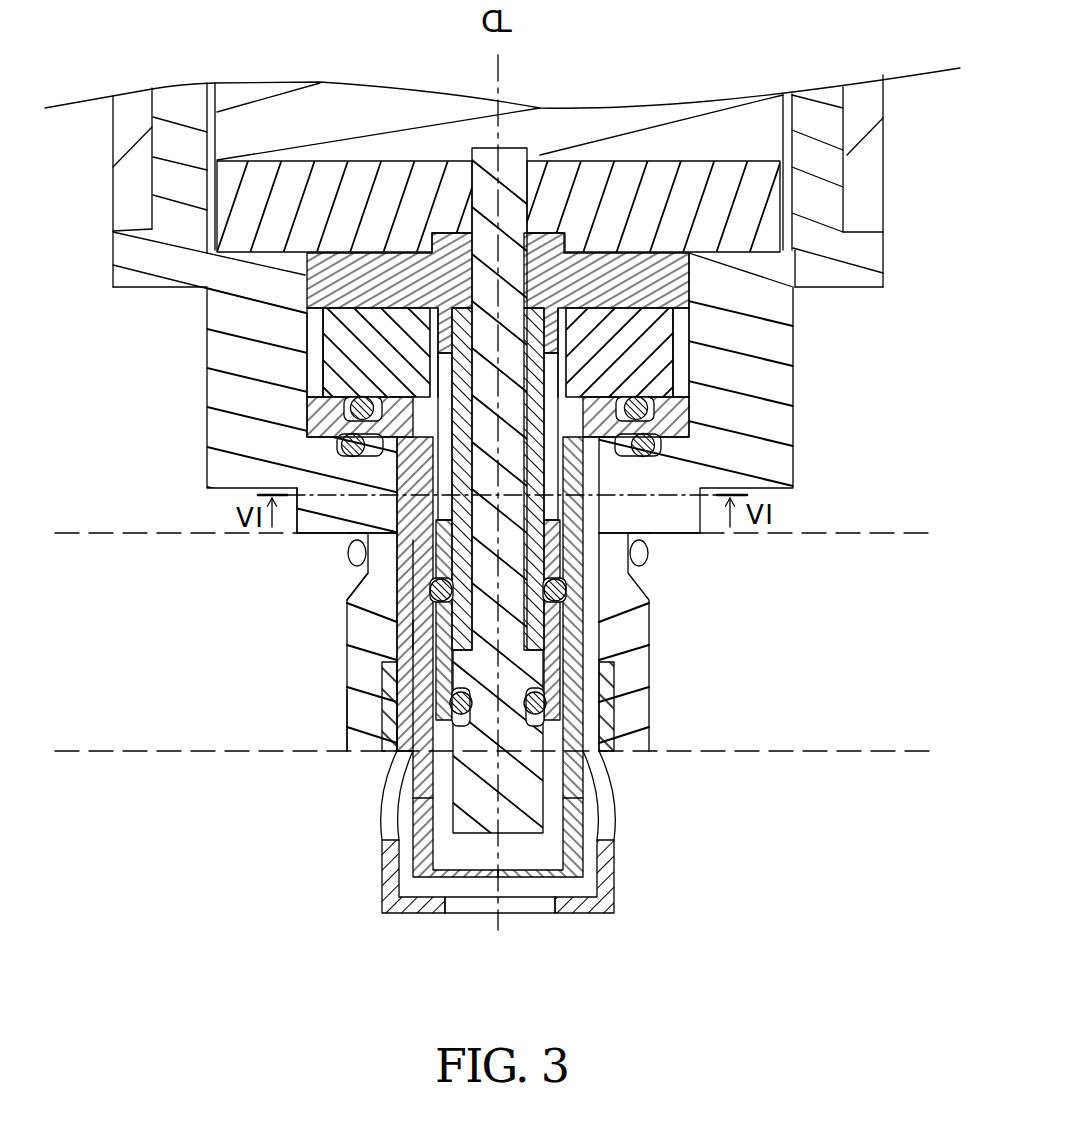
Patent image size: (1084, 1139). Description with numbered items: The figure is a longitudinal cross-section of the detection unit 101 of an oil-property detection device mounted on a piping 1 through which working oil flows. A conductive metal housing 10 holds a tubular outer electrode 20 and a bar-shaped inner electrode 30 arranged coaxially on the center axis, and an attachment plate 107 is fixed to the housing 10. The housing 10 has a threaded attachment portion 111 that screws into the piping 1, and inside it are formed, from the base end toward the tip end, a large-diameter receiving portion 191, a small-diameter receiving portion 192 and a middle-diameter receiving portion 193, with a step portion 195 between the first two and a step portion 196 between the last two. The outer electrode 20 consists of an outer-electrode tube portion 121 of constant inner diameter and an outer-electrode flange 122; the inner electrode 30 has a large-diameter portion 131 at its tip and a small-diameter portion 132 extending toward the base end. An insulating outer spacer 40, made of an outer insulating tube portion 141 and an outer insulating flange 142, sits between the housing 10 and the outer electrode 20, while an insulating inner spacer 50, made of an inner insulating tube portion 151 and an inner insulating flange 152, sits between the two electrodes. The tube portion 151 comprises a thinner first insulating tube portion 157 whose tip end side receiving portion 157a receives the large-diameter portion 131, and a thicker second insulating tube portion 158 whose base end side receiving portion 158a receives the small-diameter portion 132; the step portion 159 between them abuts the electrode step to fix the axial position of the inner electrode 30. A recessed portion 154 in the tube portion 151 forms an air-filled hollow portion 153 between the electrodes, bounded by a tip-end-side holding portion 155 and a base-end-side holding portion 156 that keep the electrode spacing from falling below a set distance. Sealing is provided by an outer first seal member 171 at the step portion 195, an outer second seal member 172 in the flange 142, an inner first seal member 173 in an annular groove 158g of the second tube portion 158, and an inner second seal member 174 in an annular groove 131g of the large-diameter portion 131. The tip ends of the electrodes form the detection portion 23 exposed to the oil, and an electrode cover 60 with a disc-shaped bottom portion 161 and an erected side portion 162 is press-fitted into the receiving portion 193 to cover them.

The piping 1 is at (88, 533).
The housing 10 is at (883, 260).
The outer electrode 20 is at (650, 578).
The detection portion 23 is at (551, 848).
The inner electrode 30 is at (513, 322).
The outer spacer 40 is at (793, 487).
The inner spacer 50 is at (366, 735).
The electrode cover 60 is at (607, 913).
The detection unit 101 is at (98, 358).
The attachment plate 107 is at (770, 212).
The attachment portion 111 is at (347, 717).
The outer-electrode tube portion 121 is at (650, 603).
The outer-electrode flange 122 is at (660, 350).
The large-diameter portion 131 is at (533, 782).
The annular groove 131g is at (393, 755).
The small-diameter portion 132 is at (600, 554).
The outer insulating tube portion 141 is at (600, 545).
The outer insulating flange 142 is at (690, 420).
The inner insulating tube portion 151 is at (362, 577).
The inner insulating flange 152 is at (320, 293).
The hollow portion 153 is at (440, 373).
The recessed portion 154 is at (690, 443).
The tip-end-side holding portion 155 is at (345, 547).
The base-end-side holding portion 156 is at (432, 330).
The first insulating tube portion 157 is at (600, 708).
The tip end side receiving portion 157a is at (380, 667).
The second insulating tube portion 158 is at (600, 630).
The base end side receiving portion 158a is at (350, 552).
The annular groove 158g is at (400, 632).
The step portion 159 is at (600, 673).
The bottom portion 161 is at (420, 913).
The side portion 162 is at (383, 856).
The outer first seal member 171 is at (345, 447).
The outer second seal member 172 is at (350, 412).
The inner first seal member 173 is at (432, 592).
The inner second seal member 174 is at (603, 740).
The large-diameter receiving portion 191 is at (305, 352).
The small-diameter receiving portion 192 is at (330, 482).
The middle-diameter receiving portion 193 is at (360, 700).
The step portion 195 is at (690, 410).
The step portion 196 is at (600, 677).